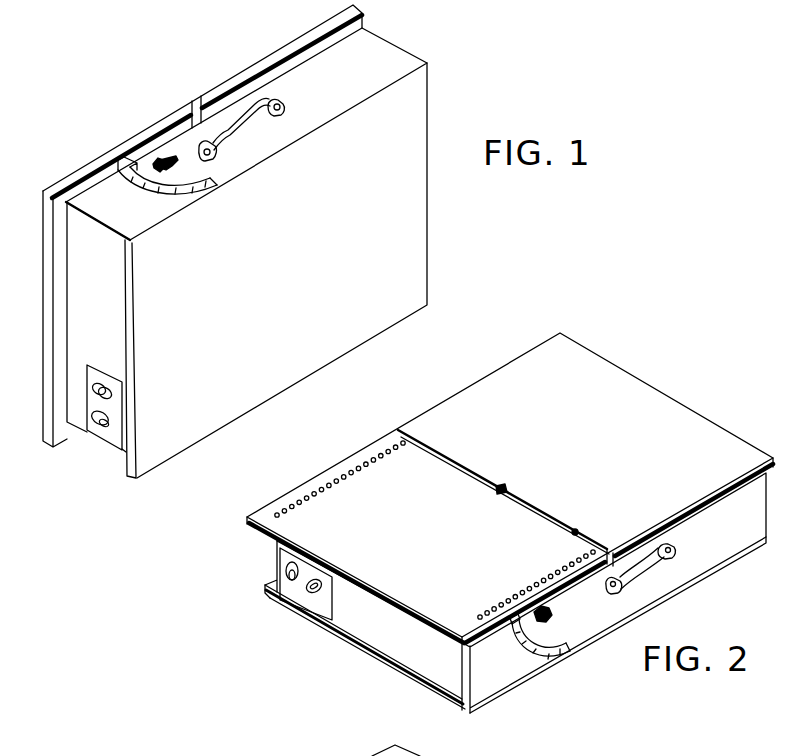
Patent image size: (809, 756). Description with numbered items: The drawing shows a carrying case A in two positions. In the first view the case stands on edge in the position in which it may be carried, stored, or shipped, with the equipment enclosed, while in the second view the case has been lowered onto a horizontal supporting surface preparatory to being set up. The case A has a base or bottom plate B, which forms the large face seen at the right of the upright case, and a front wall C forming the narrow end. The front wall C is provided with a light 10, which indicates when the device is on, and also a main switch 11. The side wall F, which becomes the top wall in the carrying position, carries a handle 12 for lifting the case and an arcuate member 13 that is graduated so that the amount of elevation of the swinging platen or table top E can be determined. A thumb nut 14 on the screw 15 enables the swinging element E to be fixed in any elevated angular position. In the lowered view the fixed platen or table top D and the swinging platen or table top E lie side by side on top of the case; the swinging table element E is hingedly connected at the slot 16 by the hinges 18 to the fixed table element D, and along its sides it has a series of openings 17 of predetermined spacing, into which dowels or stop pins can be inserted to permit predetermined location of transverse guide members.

In FIG. 1, the carrying case A is at (427, 92).
In FIG. 1, the base or bottom plate B is at (403, 223).
In FIG. 1, the front wall C is at (85, 303).
In FIG. 1, the fixed platen or table top D is at (258, 60).
In FIG. 2, the fixed platen or table top D is at (627, 388).
In FIG. 1, the swinging platen or table top E is at (95, 165).
In FIG. 2, the swinging platen or table top E is at (403, 590).
In FIG. 1, the side wall F is at (370, 47).
In FIG. 1, the light 10 is at (113, 387).
In FIG. 2, the light 10 is at (306, 584).
In FIG. 1, the main switch 11 is at (105, 424).
In FIG. 1, the handle 12 is at (257, 98).
In FIG. 2, the handle 12 is at (657, 583).
In FIG. 1, the arcuate member 13 is at (190, 188).
In FIG. 2, the arcuate member 13 is at (540, 636).
In FIG. 1, the thumb nut 14 is at (175, 160).
In FIG. 1, the screw 15 is at (165, 156).
In FIG. 2, the screw 15 is at (543, 614).
In FIG. 2, the slot 16 is at (488, 482).
In FIG. 2, the openings 17 is at (347, 473).
In FIG. 2, the hinges 18 is at (440, 453).